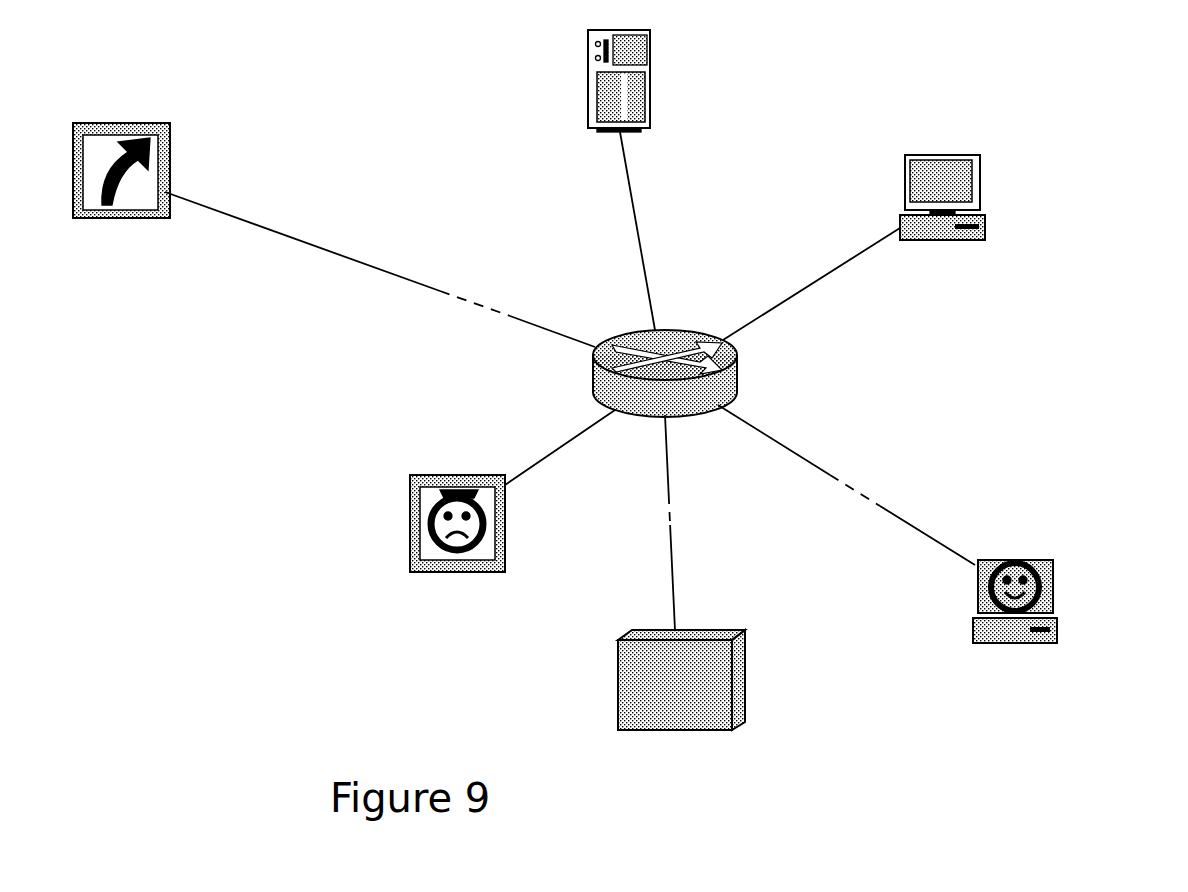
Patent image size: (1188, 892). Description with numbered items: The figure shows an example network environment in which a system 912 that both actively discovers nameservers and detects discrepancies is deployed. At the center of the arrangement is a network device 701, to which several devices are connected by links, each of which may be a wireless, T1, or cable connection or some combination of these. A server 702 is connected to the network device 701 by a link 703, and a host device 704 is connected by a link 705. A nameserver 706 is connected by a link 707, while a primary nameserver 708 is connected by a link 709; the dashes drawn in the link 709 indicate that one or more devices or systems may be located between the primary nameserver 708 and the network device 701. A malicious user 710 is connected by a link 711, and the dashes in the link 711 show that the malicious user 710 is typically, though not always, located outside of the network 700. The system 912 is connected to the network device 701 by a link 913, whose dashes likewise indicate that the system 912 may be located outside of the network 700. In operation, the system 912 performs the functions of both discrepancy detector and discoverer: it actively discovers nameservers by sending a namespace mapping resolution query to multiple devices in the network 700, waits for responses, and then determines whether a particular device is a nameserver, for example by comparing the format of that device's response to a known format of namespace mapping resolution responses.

The network 700 is at (268, 425).
The network device 701 is at (738, 376).
The server 702 is at (655, 76).
The link 703 is at (640, 218).
The host device 704 is at (985, 186).
The link 705 is at (810, 293).
The nameserver 706 is at (508, 531).
The link 707 is at (563, 463).
The primary nameserver 708 is at (172, 162).
The link 709 is at (385, 268).
The malicious user 710 is at (1045, 558).
The link 711 is at (815, 471).
The system 912 is at (740, 686).
The link 913 is at (678, 586).